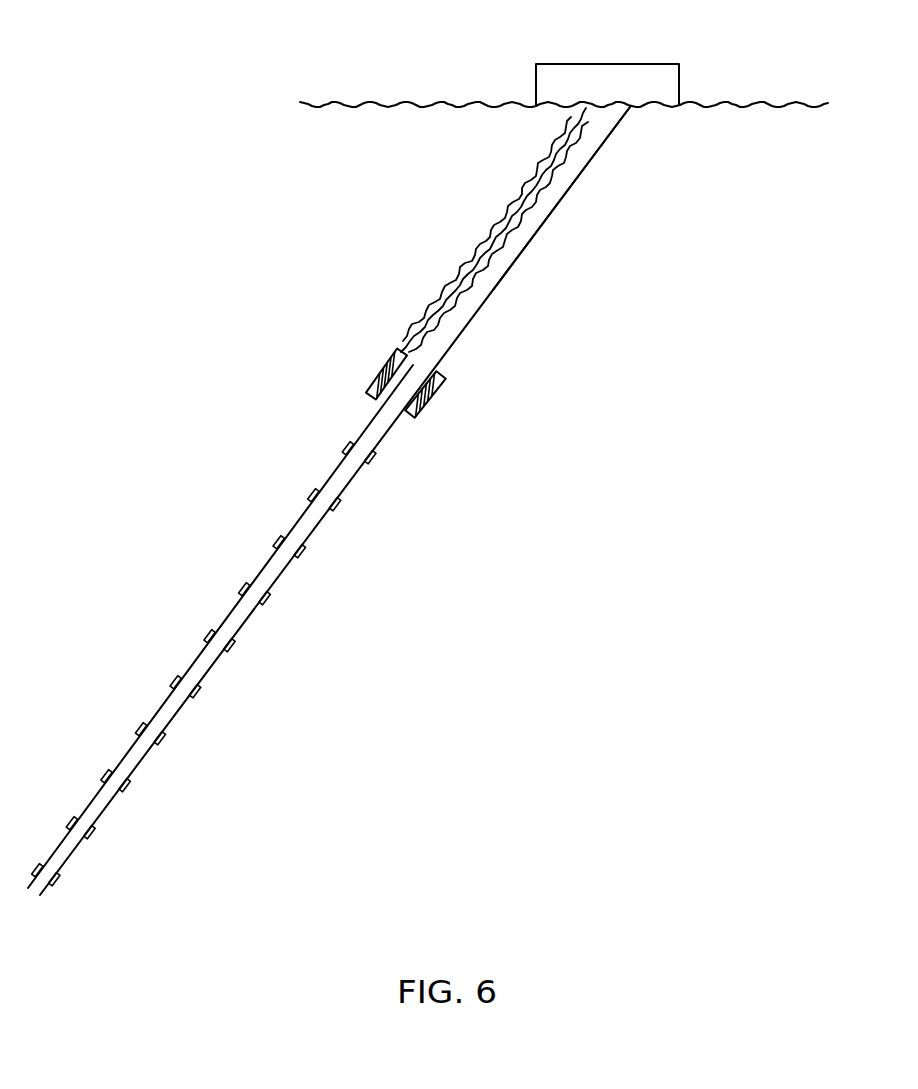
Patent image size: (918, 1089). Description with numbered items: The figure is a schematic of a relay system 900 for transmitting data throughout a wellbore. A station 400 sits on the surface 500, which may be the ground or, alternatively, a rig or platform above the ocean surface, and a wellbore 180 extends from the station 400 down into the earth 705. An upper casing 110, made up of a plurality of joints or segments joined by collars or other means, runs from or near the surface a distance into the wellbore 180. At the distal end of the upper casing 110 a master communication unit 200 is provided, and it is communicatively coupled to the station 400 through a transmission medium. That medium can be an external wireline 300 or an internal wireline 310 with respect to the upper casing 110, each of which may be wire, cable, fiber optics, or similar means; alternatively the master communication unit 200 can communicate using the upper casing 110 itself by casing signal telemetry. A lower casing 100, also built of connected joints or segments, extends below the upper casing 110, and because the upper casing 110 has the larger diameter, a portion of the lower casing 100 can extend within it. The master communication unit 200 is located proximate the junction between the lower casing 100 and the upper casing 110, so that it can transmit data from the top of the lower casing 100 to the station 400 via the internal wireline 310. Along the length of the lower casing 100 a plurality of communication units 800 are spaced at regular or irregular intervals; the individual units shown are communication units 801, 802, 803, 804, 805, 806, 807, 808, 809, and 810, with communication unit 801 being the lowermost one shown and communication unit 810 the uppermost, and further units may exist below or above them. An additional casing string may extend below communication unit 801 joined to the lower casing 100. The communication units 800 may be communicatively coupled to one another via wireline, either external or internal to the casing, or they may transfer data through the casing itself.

The relay system 900 is at (312, 60).
The surface 500 is at (378, 105).
The station 400 is at (546, 64).
The earth 705 is at (437, 143).
The upper casing 110 is at (503, 290).
The wellbore 180 is at (583, 203).
The external wireline 300 is at (456, 256).
The internal wireline 310 is at (455, 316).
The master communication unit 200 is at (446, 394).
The lower casing 100 is at (190, 643).
The plurality of communication units 800 is at (278, 542).
The communication unit 801 is at (60, 884).
The communication unit 802 is at (95, 837).
The communication unit 803 is at (130, 790).
The communication unit 804 is at (165, 743).
The communication unit 805 is at (200, 696).
The communication unit 806 is at (235, 650).
The communication unit 807 is at (270, 603).
The communication unit 808 is at (305, 556).
The communication unit 809 is at (340, 509).
The communication unit 810 is at (376, 462).